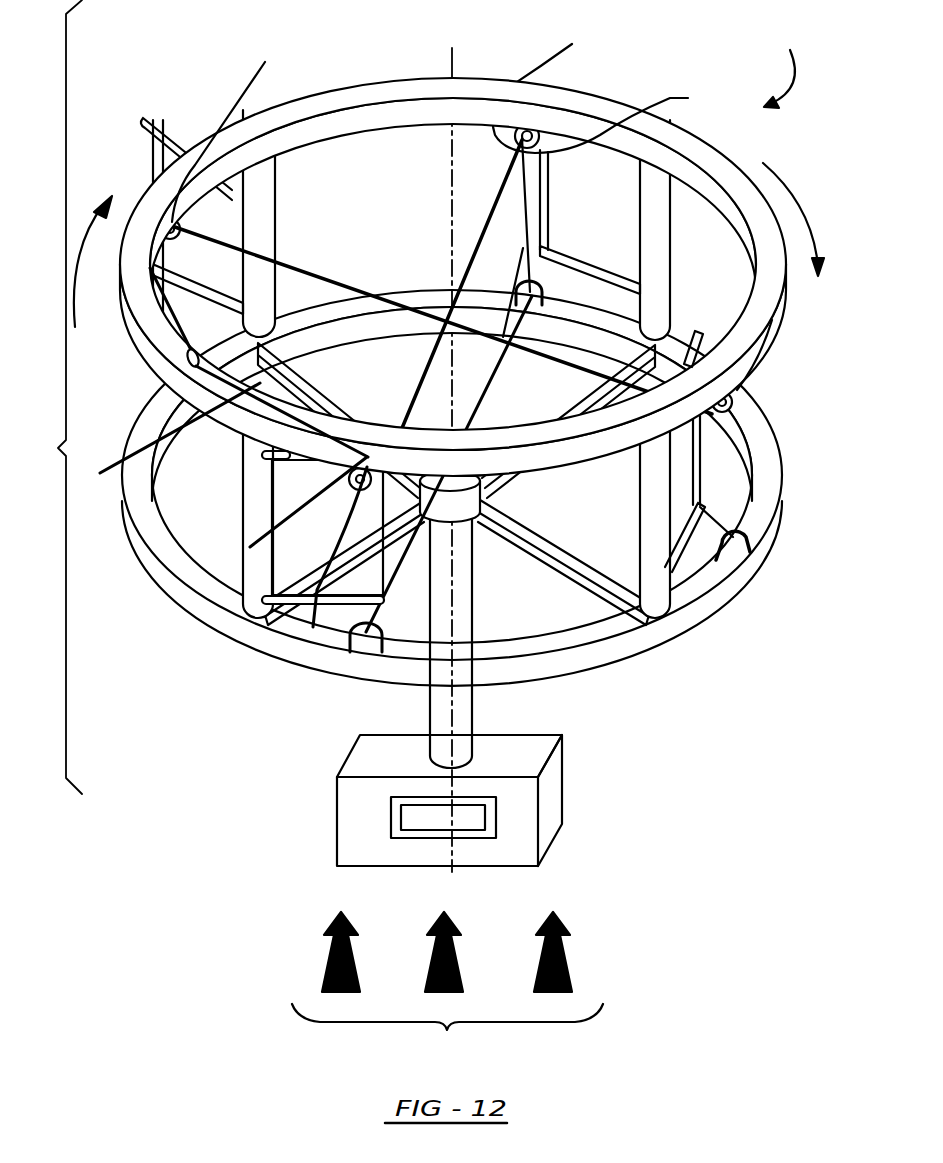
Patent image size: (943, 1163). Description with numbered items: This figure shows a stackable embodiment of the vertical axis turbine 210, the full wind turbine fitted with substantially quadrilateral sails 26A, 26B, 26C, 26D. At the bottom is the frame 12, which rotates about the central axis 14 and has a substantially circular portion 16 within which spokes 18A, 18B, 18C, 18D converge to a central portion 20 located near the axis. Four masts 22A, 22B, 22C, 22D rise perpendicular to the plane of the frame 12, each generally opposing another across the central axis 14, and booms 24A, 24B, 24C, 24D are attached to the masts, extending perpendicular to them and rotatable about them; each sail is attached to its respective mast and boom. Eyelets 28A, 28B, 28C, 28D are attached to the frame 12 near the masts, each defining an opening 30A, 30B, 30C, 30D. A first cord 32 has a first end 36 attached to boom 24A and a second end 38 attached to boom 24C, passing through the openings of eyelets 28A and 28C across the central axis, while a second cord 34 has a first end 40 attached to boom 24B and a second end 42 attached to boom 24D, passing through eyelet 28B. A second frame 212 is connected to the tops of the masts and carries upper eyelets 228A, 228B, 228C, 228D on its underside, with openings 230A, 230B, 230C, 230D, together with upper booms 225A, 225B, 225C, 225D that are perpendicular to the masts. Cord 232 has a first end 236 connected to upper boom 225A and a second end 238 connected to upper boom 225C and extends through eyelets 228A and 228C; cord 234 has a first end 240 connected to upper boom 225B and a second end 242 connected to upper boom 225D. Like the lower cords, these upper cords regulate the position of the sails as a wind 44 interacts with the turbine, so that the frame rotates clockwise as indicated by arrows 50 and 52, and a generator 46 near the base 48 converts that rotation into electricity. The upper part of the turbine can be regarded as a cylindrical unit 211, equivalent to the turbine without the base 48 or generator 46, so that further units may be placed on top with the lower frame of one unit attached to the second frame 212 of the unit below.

The frame 12 is at (747, 413).
The central axis 14 is at (454, 58).
The substantially circular portion 16 is at (753, 457).
The spoke 18A is at (317, 377).
The spoke 18B is at (573, 390).
The spoke 18C is at (537, 560).
The spoke 18D is at (403, 497).
The central portion 20 is at (475, 500).
The mast 22A is at (260, 193).
The mast 22B is at (657, 217).
The mast 22C is at (640, 570).
The mast 22D is at (253, 492).
The boom 24A is at (180, 287).
The boom 24B is at (640, 298).
The boom 24C is at (700, 505).
The boom 24D is at (378, 608).
The sail 26A is at (150, 153).
The sail 26B is at (557, 193).
The sail 26C is at (687, 463).
The sail 26D is at (370, 573).
The eyelet 28A is at (200, 360).
The eyelet 28B is at (523, 293).
The eyelet 28C is at (743, 547).
The eyelet 28D is at (377, 643).
The opening 30A is at (190, 395).
The opening 30B is at (500, 337).
The opening 30C is at (742, 557).
The opening 30D is at (363, 633).
The first cord 32 is at (210, 423).
The second cord 34 is at (487, 363).
The first end 36 is at (163, 305).
The second end 38 is at (740, 520).
The first end 40 is at (540, 270).
The second end 42 is at (387, 627).
The wind 44 is at (447, 987).
The generator 46 is at (477, 818).
The base 48 is at (460, 750).
The arrow 50 is at (75, 263).
The arrow 52 is at (795, 192).
The vertical axis turbine 210 is at (790, 67).
The cylindrical unit 211 is at (52, 397).
The second frame 212 is at (420, 90).
The upper boom 225A is at (177, 130).
The upper boom 225B is at (593, 100).
The upper boom 225C is at (703, 333).
The upper boom 225D is at (265, 460).
The eyelet 228A is at (240, 130).
The eyelet 228B is at (639, 119).
The eyelet 228C is at (717, 397).
The eyelet 228D is at (347, 602).
The opening 230A is at (165, 228).
The opening 230B is at (537, 128).
The opening 230C is at (733, 397).
The opening 230D is at (350, 485).
The cord 232 is at (307, 260).
The cord 234 is at (447, 233).
The first end 236 is at (133, 117).
The second end 238 is at (700, 345).
The first end 240 is at (504, 238).
The second end 242 is at (340, 603).